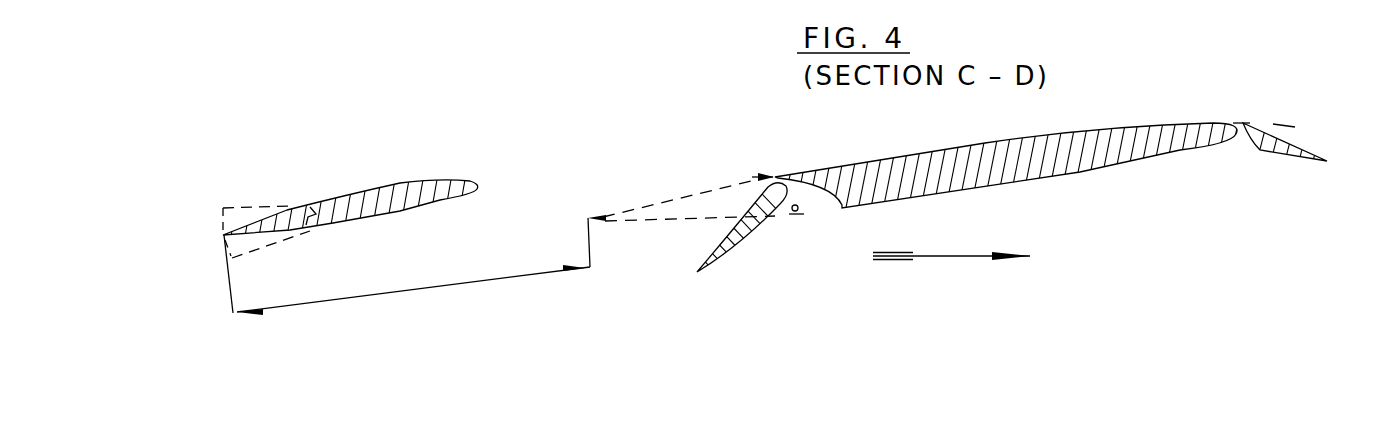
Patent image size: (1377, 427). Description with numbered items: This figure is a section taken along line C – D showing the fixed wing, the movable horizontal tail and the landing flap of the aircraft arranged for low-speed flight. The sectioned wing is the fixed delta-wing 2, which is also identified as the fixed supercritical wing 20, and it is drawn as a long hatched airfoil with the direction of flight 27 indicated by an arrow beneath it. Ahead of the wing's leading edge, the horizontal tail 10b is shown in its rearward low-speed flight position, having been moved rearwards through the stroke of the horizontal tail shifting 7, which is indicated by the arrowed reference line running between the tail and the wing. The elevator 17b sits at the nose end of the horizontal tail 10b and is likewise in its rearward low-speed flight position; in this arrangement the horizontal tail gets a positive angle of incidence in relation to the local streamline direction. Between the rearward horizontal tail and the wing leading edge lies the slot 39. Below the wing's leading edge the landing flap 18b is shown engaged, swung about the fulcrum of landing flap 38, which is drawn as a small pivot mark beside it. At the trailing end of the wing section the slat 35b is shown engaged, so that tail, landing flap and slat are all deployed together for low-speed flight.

The stroke of the horizontal tail shifting 7 is at (410, 291).
The horizontal tail in its rearward low-speed flight position 10b is at (403, 197).
The elevator in its rearward low-speed flight position 17b is at (282, 223).
The landing flaps engaged 18b is at (737, 228).
The fixed delta-wings 2 is at (1007, 218).
The fixed supercritical wings 20 is at (1067, 153).
The direction of flight 27 is at (954, 256).
The slat engaged 35b is at (1282, 148).
The fulcrum of landing flap 38 is at (795, 214).
The slot 39 is at (752, 177).